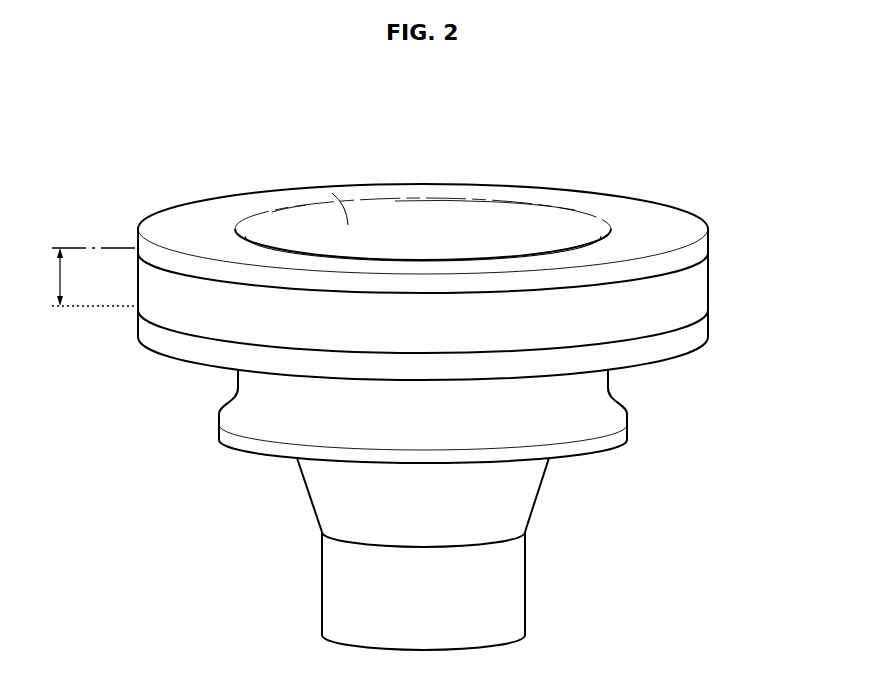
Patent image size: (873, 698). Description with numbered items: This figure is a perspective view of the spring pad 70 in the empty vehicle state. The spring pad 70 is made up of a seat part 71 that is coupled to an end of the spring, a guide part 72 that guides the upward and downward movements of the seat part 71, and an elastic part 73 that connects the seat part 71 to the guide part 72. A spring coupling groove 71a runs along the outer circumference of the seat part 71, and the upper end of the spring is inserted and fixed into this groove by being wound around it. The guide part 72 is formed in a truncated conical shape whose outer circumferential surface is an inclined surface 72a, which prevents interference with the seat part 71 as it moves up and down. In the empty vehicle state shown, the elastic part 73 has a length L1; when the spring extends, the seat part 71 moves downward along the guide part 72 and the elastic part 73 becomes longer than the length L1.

The spring pad 70 is at (592, 184).
The seat part 71 is at (157, 333).
The spring coupling groove 71a is at (551, 410).
The guide part 72 is at (195, 218).
The inclined surface 72a is at (338, 502).
The elastic part 73 is at (697, 285).
The length of the elastic part in the empty vehicle state L1 is at (81, 277).